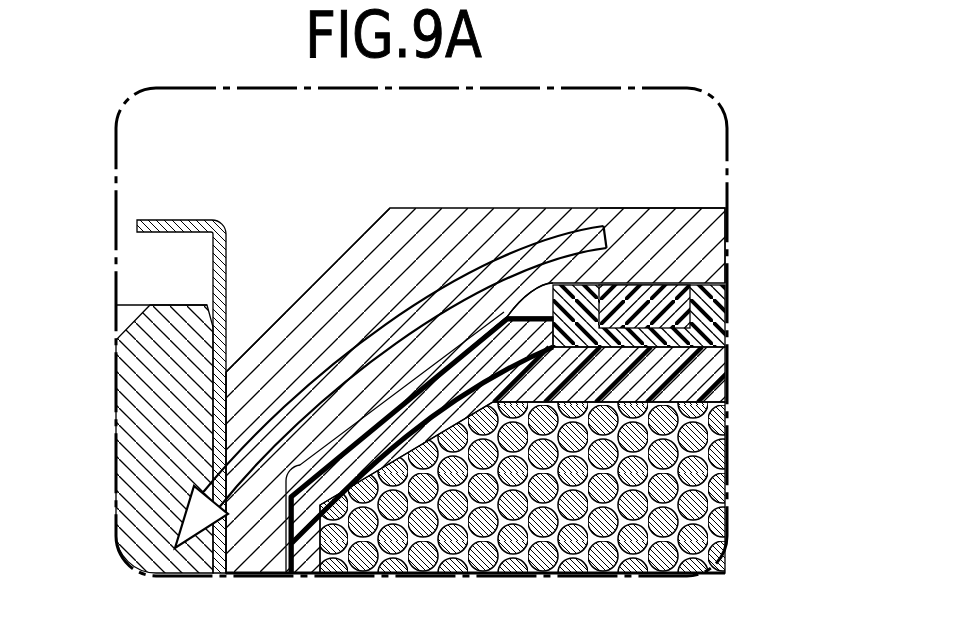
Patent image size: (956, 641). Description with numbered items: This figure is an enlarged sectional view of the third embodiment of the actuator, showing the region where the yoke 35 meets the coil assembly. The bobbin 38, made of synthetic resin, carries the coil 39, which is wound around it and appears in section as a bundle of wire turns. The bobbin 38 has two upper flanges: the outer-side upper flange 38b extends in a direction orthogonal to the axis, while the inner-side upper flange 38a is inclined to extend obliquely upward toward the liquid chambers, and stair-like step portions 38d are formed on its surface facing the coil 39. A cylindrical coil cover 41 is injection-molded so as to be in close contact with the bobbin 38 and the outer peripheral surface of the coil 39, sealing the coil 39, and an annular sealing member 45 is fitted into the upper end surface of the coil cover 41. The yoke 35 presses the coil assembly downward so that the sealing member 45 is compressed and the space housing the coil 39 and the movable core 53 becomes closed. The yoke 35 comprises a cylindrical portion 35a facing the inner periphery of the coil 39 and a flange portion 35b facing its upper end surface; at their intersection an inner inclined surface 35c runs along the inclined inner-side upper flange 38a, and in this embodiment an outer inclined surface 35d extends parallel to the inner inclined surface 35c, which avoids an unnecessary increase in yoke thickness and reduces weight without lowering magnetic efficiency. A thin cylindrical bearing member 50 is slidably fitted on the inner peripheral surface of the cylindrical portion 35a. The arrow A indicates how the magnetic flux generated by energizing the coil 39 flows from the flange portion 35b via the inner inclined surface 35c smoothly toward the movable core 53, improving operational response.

The bearing member 50 is at (160, 220).
The movable core 53 is at (147, 377).
The yoke 35 is at (470, 209).
The cylindrical portion 35a is at (257, 550).
The flange portion 35b is at (702, 223).
The inner inclined surface 35c is at (460, 365).
The outer inclined surface 35d is at (320, 277).
The bobbin 38 is at (349, 420).
The inner-side upper flange 38a is at (413, 390).
The outer-side upper flange 38b is at (587, 377).
The step portions 38d is at (470, 573).
The coil 39 is at (732, 471).
The coil cover 41 is at (713, 313).
The sealing member 45 is at (656, 297).
The arrow A is at (203, 507).